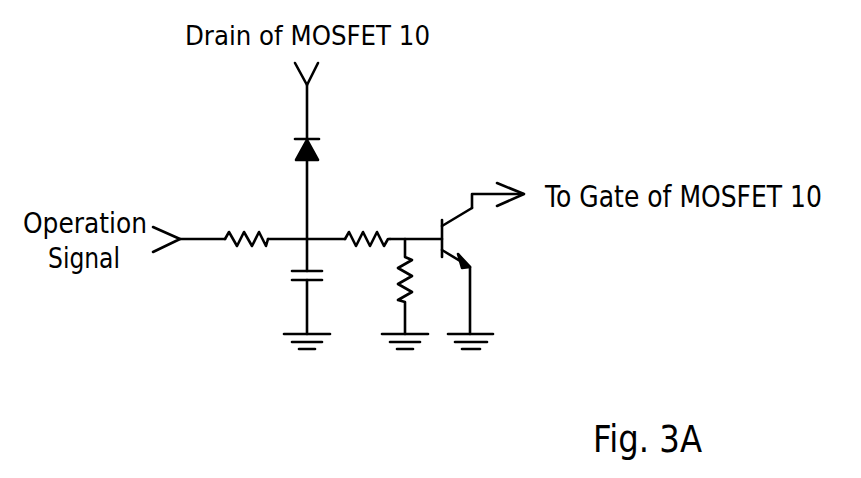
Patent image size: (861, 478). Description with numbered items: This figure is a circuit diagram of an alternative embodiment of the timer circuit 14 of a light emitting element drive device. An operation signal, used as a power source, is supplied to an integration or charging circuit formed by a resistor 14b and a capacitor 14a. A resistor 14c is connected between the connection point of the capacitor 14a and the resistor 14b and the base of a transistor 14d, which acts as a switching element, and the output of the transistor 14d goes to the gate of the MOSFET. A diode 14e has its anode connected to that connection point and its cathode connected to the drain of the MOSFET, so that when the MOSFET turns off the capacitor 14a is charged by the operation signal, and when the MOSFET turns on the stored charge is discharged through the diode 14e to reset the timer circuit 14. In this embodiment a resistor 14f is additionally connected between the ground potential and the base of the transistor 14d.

The timer circuit 14 is at (380, 175).
The capacitor 14a is at (293, 282).
The resistor 14b is at (240, 243).
The resistor 14c is at (358, 242).
The transistor 14d is at (452, 220).
The diode 14e is at (300, 150).
The resistor 14f is at (410, 280).